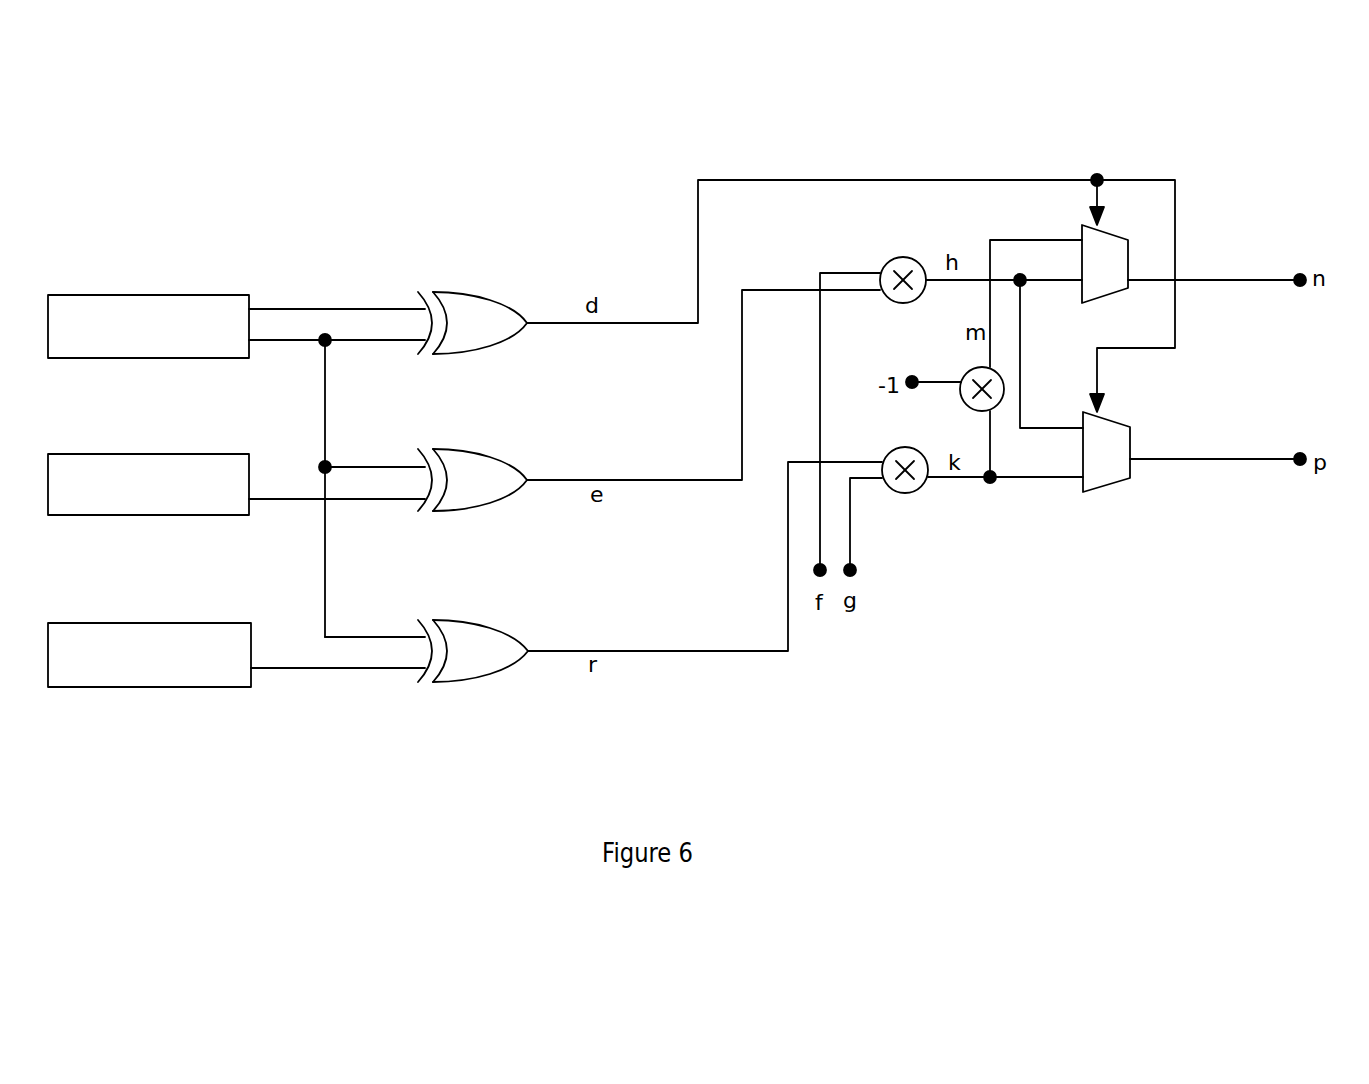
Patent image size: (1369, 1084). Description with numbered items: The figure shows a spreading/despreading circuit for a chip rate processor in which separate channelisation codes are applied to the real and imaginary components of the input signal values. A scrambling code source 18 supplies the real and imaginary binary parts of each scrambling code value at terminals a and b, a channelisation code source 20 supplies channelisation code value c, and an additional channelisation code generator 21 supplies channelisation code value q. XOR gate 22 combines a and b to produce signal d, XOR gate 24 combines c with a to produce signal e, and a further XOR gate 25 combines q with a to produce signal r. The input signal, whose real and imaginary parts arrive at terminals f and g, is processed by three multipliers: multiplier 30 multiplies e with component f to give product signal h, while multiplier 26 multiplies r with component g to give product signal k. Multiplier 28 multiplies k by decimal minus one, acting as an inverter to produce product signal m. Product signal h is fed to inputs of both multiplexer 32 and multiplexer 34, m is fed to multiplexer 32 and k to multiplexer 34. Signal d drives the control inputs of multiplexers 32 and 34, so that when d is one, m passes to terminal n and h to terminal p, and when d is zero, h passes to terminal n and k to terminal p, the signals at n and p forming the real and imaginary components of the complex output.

The scrambling code source 18 is at (172, 295).
The channelisation code source 20 is at (127, 515).
The additional channelisation code generator 21 is at (97, 687).
The XOR gate 22 is at (465, 292).
The XOR gate 24 is at (465, 512).
The further XOR gate 25 is at (467, 682).
The multiplier 26 is at (905, 493).
The multiplier 28 is at (973, 410).
The multiplier 30 is at (888, 262).
The multiplexer 32 is at (1112, 293).
The multiplexer 34 is at (1103, 492).